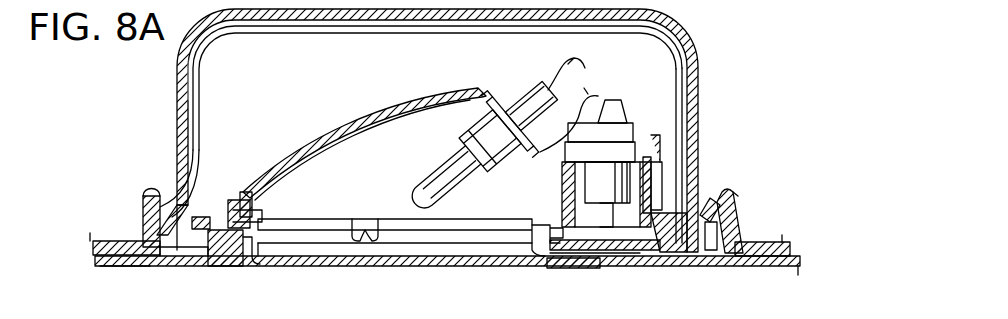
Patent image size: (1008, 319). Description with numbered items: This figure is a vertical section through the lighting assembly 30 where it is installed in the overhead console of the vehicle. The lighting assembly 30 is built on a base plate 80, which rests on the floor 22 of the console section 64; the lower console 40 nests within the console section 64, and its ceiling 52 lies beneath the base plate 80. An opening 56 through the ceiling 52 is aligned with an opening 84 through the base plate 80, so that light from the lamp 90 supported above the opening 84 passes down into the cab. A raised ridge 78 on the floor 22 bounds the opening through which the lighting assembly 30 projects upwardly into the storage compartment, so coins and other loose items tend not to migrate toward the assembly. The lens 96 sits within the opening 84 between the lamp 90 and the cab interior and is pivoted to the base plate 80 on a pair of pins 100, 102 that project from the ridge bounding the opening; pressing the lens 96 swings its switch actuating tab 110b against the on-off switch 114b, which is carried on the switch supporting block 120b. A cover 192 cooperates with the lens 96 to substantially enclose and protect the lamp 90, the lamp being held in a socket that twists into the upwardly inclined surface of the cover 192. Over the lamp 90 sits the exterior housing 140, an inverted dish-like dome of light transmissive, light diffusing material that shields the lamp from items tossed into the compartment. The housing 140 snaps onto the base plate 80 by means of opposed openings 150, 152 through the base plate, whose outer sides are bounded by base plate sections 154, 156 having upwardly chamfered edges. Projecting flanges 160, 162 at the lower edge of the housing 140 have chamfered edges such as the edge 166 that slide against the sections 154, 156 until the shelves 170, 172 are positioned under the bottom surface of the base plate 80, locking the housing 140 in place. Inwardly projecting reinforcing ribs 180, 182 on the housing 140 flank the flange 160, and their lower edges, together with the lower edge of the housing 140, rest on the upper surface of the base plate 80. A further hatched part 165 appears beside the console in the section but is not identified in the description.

The exterior housing 140 is at (672, 30).
The reinforcing rib 182 is at (203, 160).
The reinforcing rib 180 is at (680, 148).
The lighting assembly 30 is at (157, 103).
The base plate section 156 is at (172, 190).
The shelf 172 is at (162, 183).
The raised ridge 78 is at (150, 190).
The floor defining wall section 22 is at (142, 218).
The foot 165 is at (140, 241).
The ceiling 52 is at (97, 261).
The lower overhead console 40 is at (124, 264).
The projecting flange 162 is at (153, 265).
The opening 152 is at (202, 266).
The opening 56 is at (248, 266).
The lens 96 is at (333, 266).
The switch actuating tab 110b is at (580, 268).
The pin 102 is at (385, 226).
The pin 100 is at (364, 222).
The opening 84 is at (262, 230).
The base plate 80 is at (227, 212).
The cover 192 is at (355, 116).
The lamp 90 is at (444, 204).
The switch 114b is at (590, 132).
The switch supporting block 120b is at (697, 141).
The opening 150 is at (677, 261).
The projecting flange 160 is at (693, 261).
The base plate section 154 is at (708, 198).
The shelf 170 is at (727, 210).
The console section 64 is at (730, 190).
The chamfered edge 166 is at (730, 235).